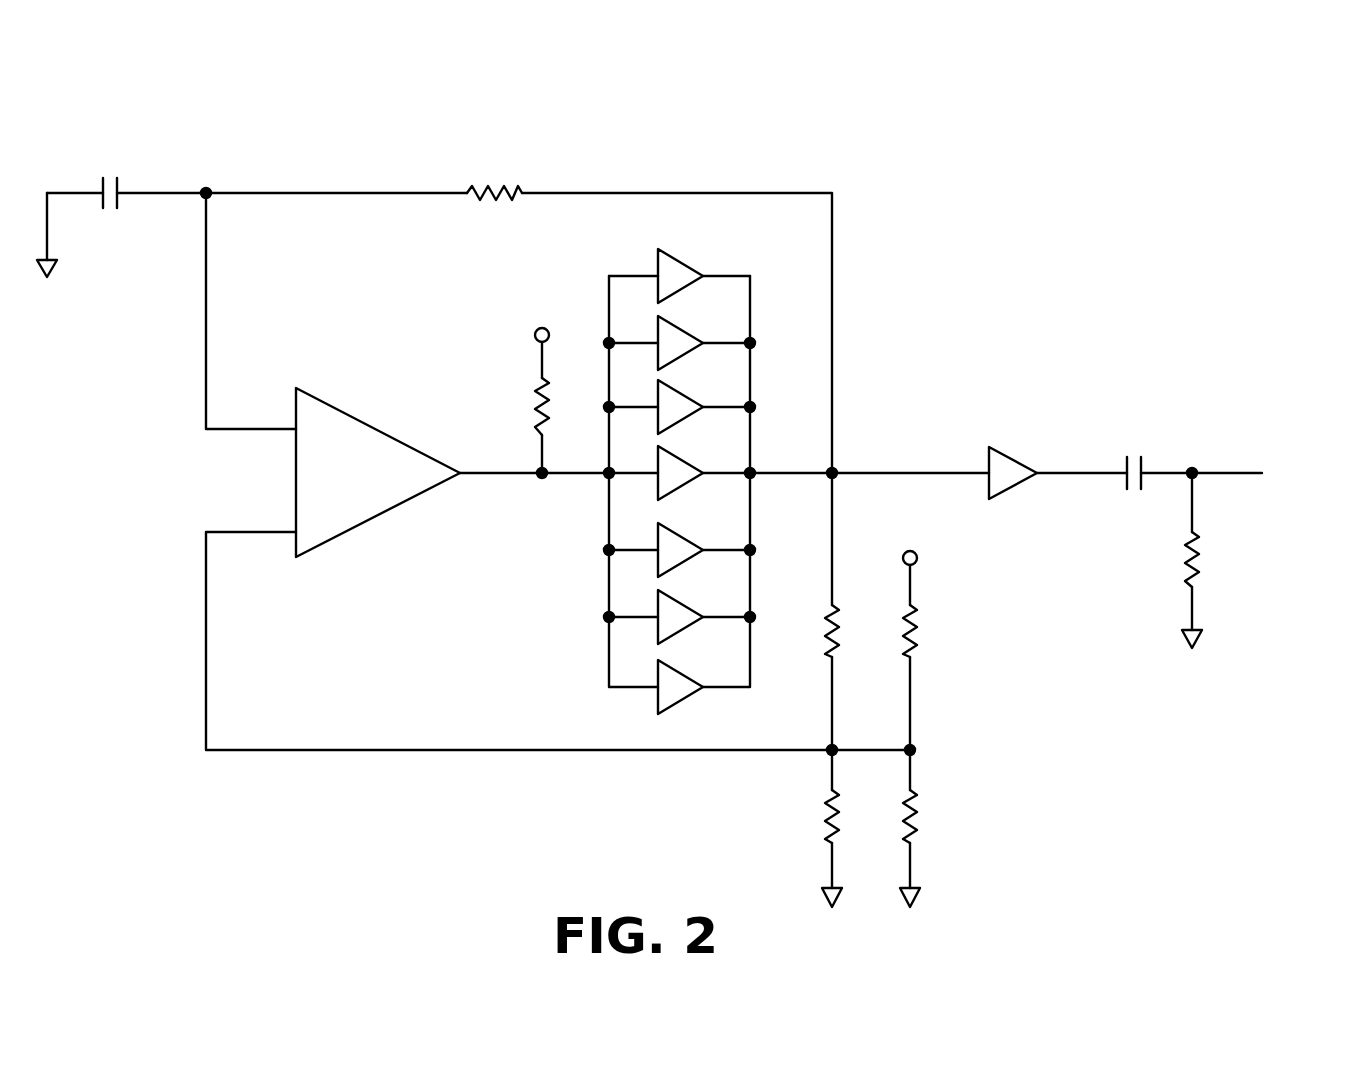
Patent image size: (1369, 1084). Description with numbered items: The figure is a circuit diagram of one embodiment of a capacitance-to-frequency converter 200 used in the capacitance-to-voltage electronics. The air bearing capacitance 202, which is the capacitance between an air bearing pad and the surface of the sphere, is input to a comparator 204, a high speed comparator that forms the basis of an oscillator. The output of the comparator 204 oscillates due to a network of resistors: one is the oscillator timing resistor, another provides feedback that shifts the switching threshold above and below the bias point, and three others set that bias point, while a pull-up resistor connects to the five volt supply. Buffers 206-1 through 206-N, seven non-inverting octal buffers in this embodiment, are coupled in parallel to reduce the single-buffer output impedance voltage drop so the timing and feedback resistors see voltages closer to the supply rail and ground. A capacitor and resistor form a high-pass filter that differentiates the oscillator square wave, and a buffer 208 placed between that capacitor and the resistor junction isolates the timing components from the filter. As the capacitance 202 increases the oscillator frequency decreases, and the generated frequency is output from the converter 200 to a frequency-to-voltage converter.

The capacitance-to-frequency converter 200 is at (968, 142).
The air bearing capacitance 202 is at (142, 188).
The comparator 204 is at (382, 430).
The buffer 206-1 is at (686, 262).
The buffer 206-N is at (695, 692).
The buffer 208 is at (1018, 485).